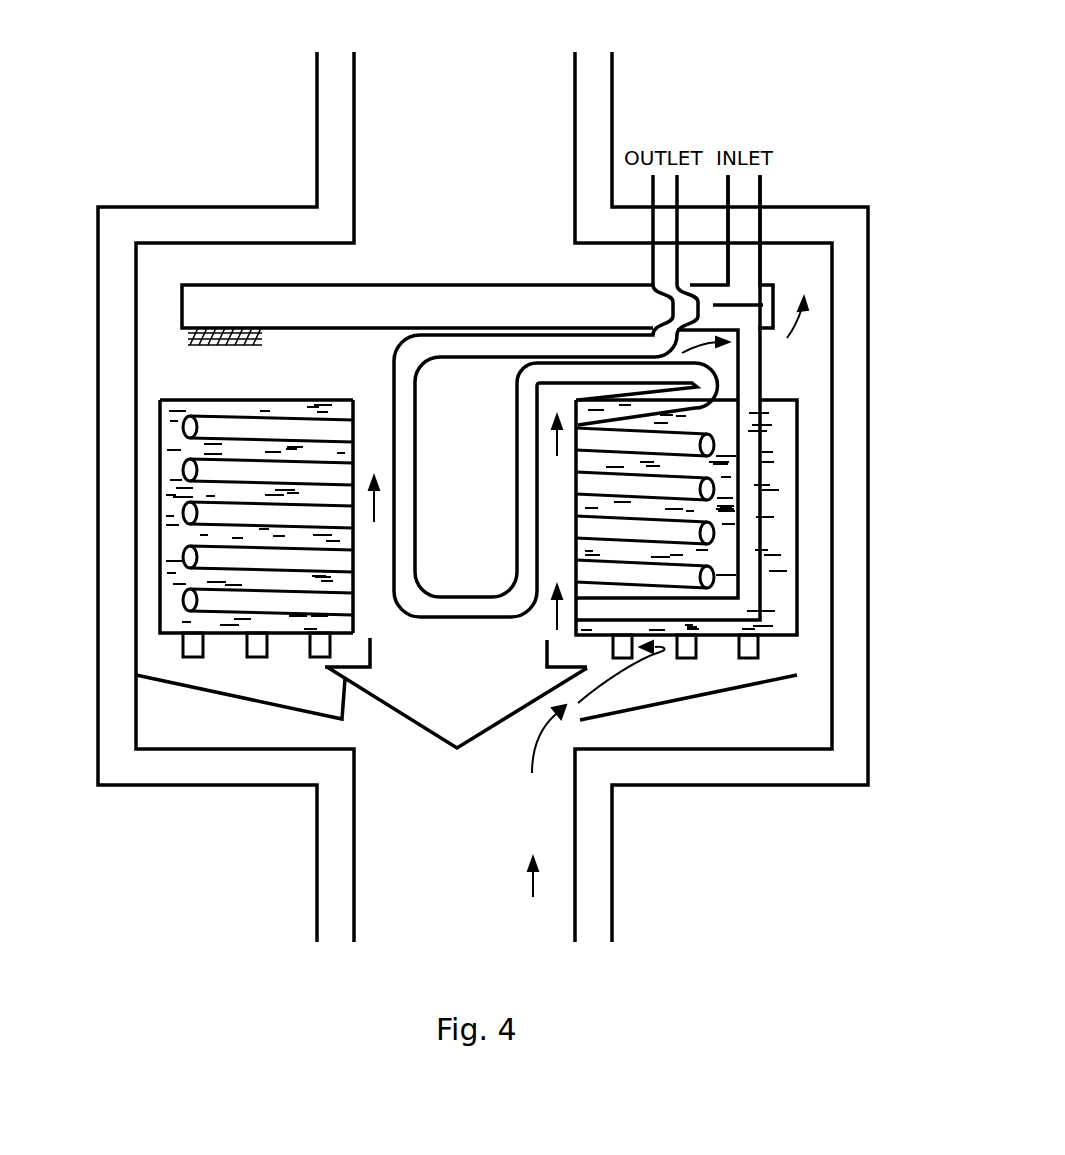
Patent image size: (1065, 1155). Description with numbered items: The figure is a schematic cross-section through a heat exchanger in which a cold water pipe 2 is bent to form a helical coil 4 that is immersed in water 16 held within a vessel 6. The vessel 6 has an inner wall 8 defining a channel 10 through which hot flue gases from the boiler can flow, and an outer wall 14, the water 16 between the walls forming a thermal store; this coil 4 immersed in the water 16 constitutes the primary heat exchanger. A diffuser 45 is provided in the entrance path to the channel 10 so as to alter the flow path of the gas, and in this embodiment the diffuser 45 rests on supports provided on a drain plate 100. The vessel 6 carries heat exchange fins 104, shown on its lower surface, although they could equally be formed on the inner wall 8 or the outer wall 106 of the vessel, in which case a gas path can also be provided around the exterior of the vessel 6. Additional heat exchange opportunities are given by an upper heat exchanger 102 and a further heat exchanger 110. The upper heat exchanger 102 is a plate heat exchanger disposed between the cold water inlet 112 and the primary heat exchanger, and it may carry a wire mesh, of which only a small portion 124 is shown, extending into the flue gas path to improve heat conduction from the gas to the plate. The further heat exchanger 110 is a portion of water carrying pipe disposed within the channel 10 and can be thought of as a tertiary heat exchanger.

The cold water pipe 2 is at (233, 605).
The helical coil 4 is at (693, 533).
The vessel 6 is at (162, 638).
The inner wall 8 is at (355, 452).
The channel 10 is at (462, 397).
The outer wall 14 is at (780, 570).
The water 16 is at (168, 436).
The diffuser 45 is at (423, 729).
The drain plate 100 is at (673, 703).
The upper heat exchanger 102 is at (181, 306).
The heat exchange fins 104 is at (760, 647).
The outer wall 106 is at (162, 522).
The further heat exchanger 110 is at (418, 496).
The cold water inlet 112 is at (762, 186).
The wire mesh portion 124 is at (177, 355).